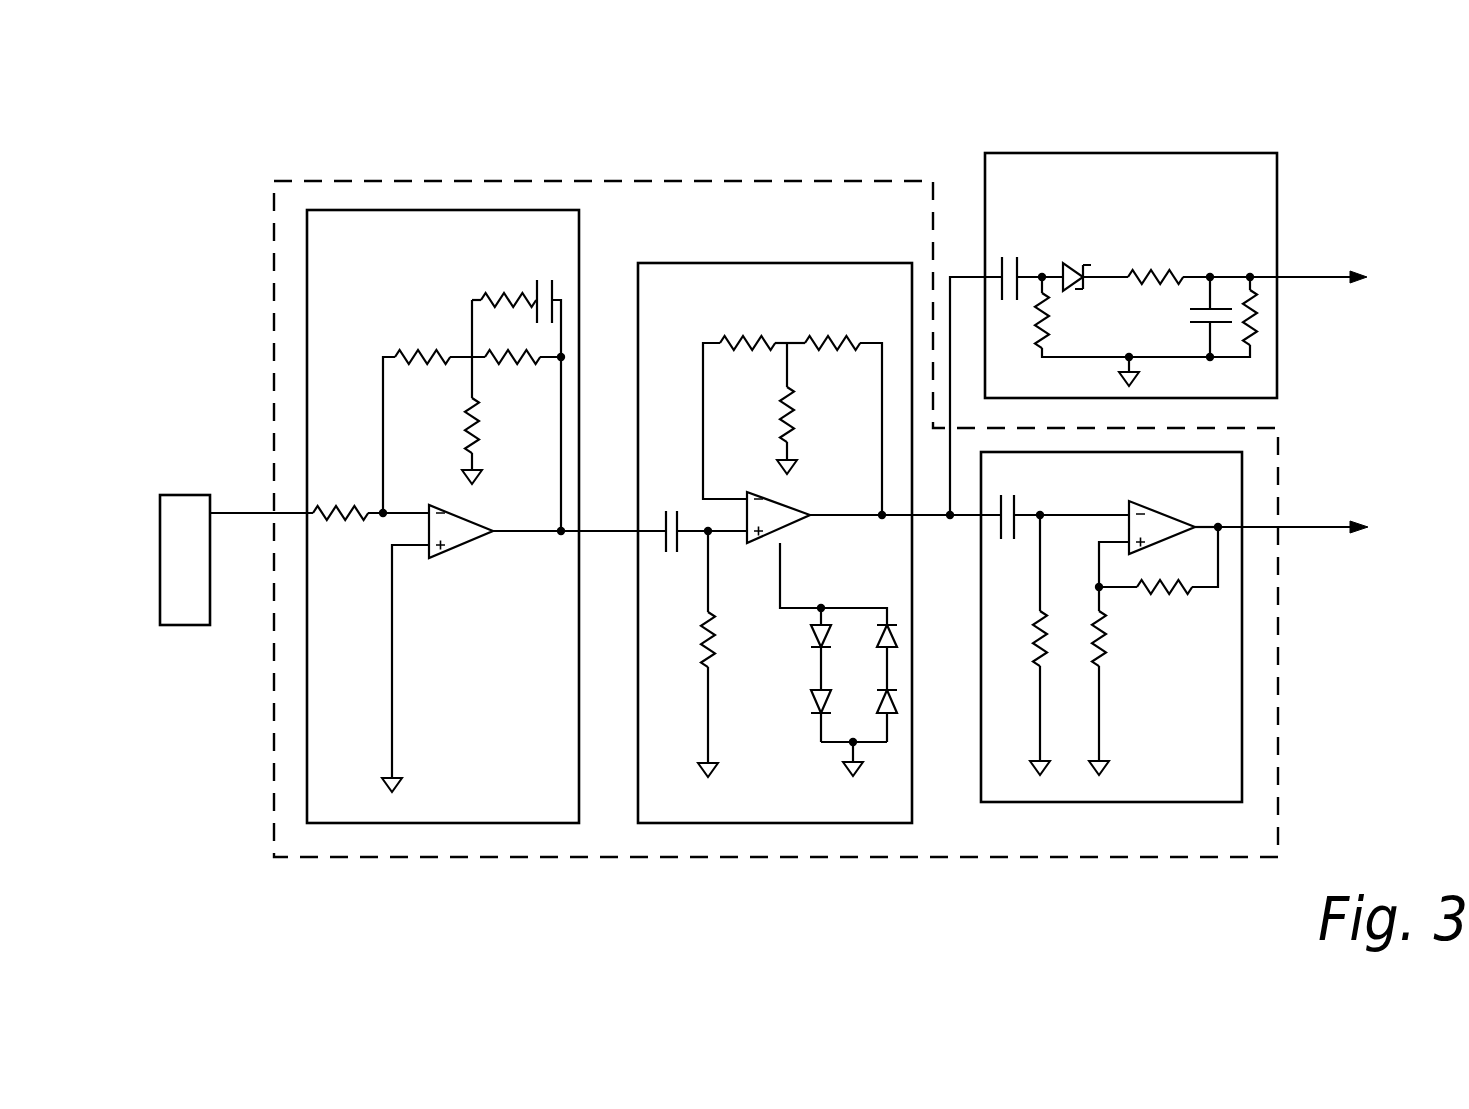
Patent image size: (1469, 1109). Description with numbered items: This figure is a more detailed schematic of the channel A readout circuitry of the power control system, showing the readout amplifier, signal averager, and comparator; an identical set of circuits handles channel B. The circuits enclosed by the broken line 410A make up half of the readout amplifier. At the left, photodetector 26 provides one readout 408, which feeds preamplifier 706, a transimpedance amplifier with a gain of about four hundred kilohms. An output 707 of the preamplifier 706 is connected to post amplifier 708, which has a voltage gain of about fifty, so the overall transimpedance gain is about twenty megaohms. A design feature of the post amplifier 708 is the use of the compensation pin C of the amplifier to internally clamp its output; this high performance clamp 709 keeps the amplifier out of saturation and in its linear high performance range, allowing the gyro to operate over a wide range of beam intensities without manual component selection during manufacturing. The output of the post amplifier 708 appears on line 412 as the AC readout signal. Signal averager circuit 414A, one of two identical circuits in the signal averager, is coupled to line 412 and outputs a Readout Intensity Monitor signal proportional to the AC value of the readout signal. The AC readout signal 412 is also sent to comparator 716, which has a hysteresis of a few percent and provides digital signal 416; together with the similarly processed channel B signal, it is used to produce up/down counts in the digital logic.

The photodetector 26 is at (195, 625).
The readout 408 is at (242, 518).
The readout amplifier circuits 410A is at (604, 181).
The preamplifier 706 is at (579, 259).
The output 707 is at (606, 537).
The post amplifier 708 is at (750, 263).
The high performance clamp 709 is at (810, 675).
The line 412 is at (933, 525).
The signal averager circuit 414A is at (1277, 200).
The comparator 716 is at (1243, 775).
The digital signal 416 is at (1280, 526).